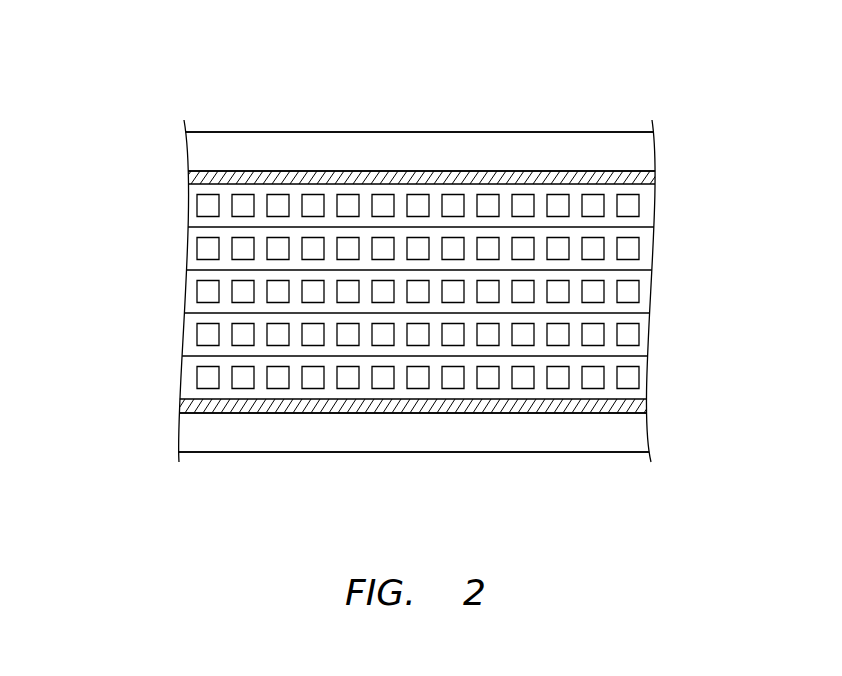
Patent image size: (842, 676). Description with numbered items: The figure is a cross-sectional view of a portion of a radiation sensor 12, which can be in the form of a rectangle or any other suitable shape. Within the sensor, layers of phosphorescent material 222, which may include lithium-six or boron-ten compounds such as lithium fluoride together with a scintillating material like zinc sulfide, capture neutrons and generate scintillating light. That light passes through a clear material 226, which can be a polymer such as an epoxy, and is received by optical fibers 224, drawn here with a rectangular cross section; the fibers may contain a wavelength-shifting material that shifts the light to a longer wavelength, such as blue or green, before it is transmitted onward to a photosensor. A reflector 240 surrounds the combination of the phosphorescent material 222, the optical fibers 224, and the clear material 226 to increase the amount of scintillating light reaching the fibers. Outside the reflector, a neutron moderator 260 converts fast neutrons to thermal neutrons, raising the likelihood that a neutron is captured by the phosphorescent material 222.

The radiation sensor 12 is at (637, 68).
The phosphorescent material 222 is at (180, 352).
The optical fibers 224 is at (630, 378).
The clear material 226 is at (362, 290).
The reflector 240 is at (259, 171).
The neutron moderator 260 is at (640, 162).